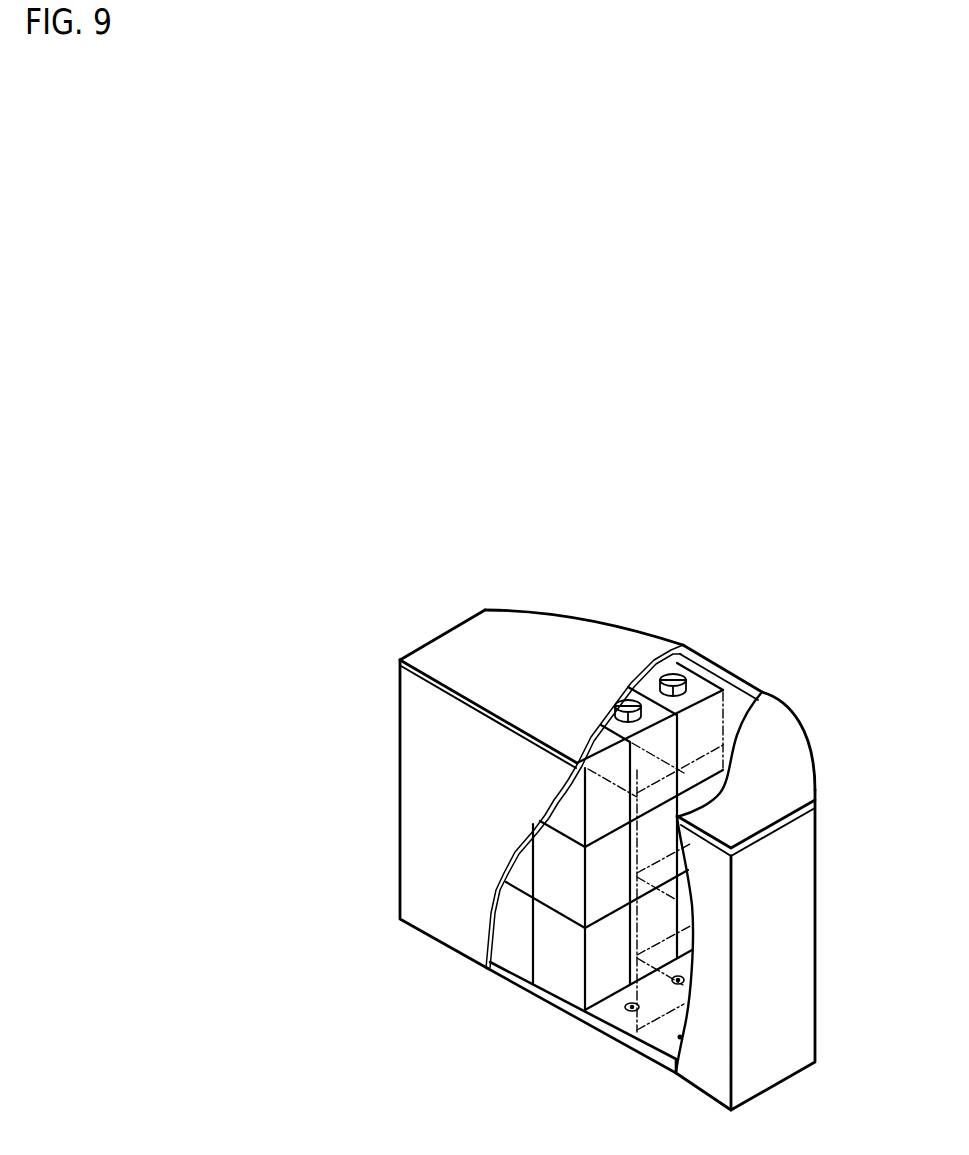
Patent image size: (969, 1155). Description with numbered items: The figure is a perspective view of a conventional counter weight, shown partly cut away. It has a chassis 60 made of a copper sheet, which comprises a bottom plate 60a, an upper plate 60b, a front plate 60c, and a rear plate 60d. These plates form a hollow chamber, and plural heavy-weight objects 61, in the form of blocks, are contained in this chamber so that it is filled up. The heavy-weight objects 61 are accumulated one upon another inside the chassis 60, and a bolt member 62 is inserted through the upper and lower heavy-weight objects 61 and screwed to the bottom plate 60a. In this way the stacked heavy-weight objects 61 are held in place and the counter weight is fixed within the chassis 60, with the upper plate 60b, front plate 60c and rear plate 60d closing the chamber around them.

The chassis 60 is at (810, 735).
The bottom plate 60a is at (663, 1037).
The upper plate 60b is at (463, 638).
The front plate 60c is at (433, 917).
The rear plate 60d is at (818, 883).
The heavy-weight objects 61 is at (508, 940).
The bolt member 62 is at (628, 700).